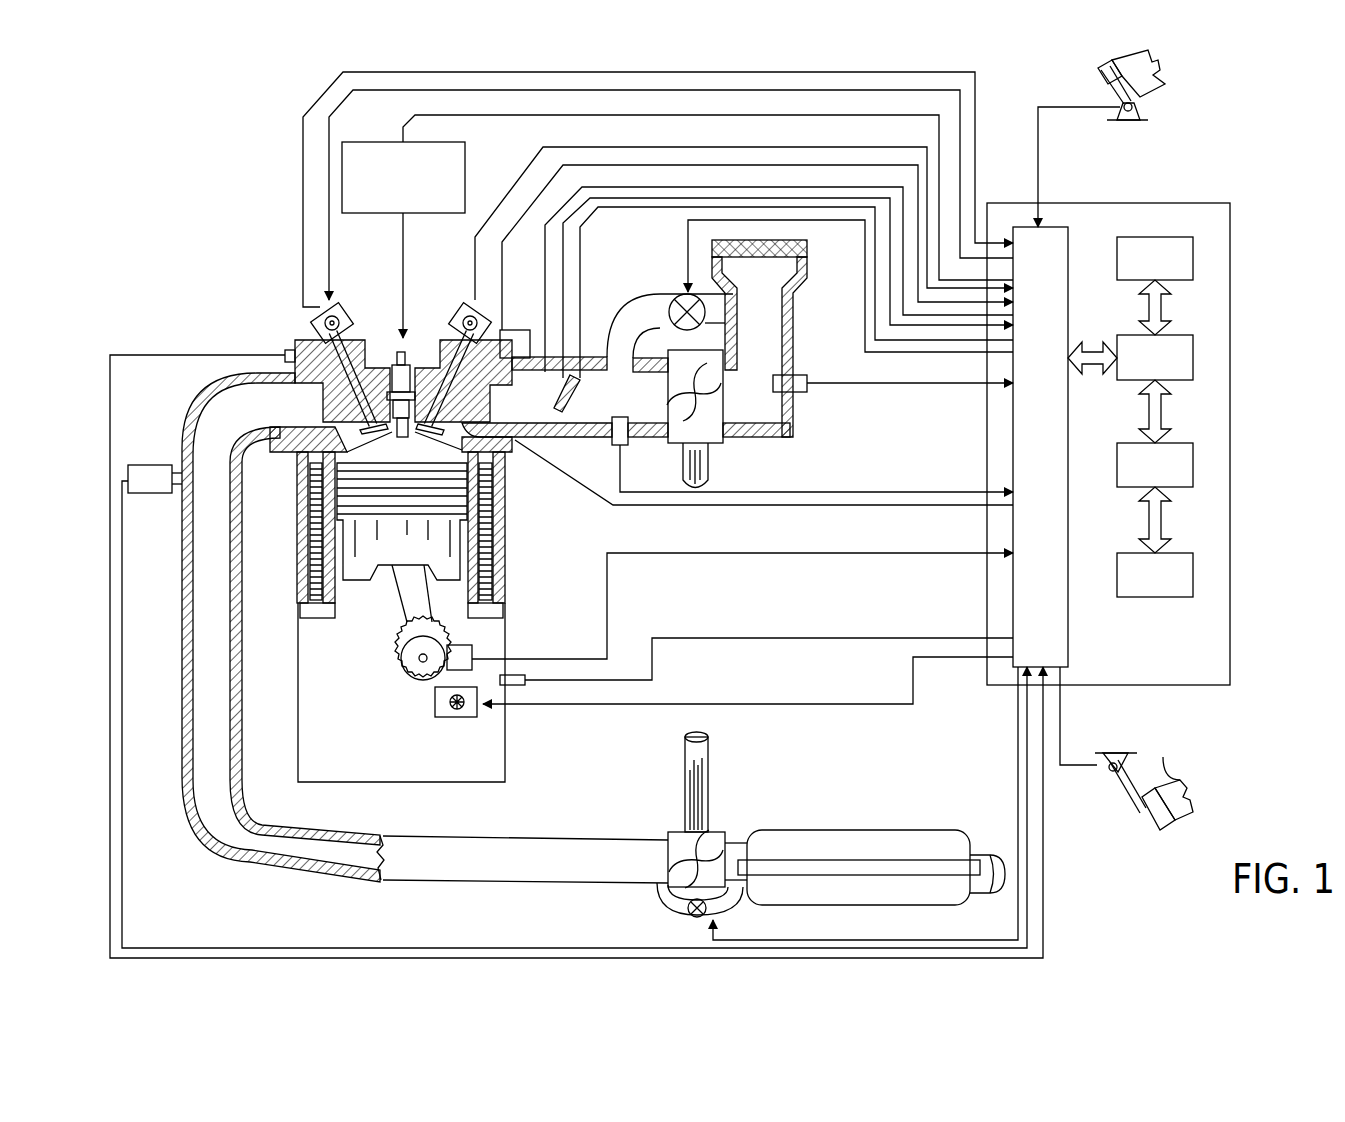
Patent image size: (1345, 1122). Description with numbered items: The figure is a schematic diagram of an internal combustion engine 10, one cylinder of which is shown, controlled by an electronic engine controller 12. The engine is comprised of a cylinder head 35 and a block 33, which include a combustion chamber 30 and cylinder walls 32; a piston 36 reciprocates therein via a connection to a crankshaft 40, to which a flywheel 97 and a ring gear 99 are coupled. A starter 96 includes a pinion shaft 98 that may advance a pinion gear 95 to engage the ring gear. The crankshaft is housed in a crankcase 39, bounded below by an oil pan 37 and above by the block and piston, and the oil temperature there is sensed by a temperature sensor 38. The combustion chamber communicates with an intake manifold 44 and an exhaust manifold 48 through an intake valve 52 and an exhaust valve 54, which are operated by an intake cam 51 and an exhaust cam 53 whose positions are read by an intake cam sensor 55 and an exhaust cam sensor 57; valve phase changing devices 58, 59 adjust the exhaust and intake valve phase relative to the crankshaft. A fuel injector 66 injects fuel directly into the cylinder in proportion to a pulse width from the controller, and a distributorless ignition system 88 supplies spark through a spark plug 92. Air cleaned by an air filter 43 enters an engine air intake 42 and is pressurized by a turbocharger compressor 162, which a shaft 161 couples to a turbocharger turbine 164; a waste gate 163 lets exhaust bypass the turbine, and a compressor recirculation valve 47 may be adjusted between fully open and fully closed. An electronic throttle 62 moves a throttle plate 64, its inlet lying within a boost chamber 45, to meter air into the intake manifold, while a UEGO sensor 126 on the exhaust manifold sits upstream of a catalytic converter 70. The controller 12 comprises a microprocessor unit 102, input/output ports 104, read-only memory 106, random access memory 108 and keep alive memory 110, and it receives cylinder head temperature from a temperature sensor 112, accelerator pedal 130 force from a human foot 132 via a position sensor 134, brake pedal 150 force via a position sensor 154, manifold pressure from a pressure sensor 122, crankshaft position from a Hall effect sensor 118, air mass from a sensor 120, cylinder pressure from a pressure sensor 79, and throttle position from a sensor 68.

The internal combustion engine 10 is at (230, 292).
The electronic engine controller 12 is at (1232, 203).
The combustion chamber 30 is at (397, 447).
The cylinder walls 32 is at (343, 600).
The engine block 33 is at (291, 489).
The cylinder head 35 is at (292, 345).
The piston 36 is at (392, 583).
The oil pan 37 is at (505, 758).
The temperature sensor 38 is at (522, 681).
The crankcase 39 is at (316, 702).
The crankshaft 40 is at (402, 690).
The engine air intake 42 is at (628, 262).
The air filter 43 is at (770, 250).
The intake manifold 44 is at (537, 397).
The boost chamber 45 is at (704, 397).
The compressor recirculation valve 47 is at (672, 295).
The exhaust manifold 48 is at (281, 627).
The intake cam 51 is at (462, 316).
The intake valve 52 is at (445, 418).
The exhaust cam 53 is at (335, 315).
The exhaust valve 54 is at (345, 425).
The intake cam sensor 55 is at (490, 332).
The exhaust cam sensor 57 is at (322, 318).
The valve phase changing device 58 is at (345, 325).
The valve phase changing device 59 is at (482, 312).
The electronic throttle 62 is at (572, 390).
The throttle plate 64 is at (568, 418).
The fuel injector 66 is at (536, 452).
The throttle position sensor 68 is at (500, 356).
The catalytic converter 70 is at (790, 830).
The cylinder pressure sensor 79 is at (412, 368).
The distributorless ignition system 88 is at (365, 142).
The spark plug 92 is at (397, 352).
The pinion gear 95 is at (445, 718).
The starter 96 is at (460, 710).
The flywheel 97 is at (400, 658).
The pinion shaft 98 is at (448, 722).
The ring gear 99 is at (425, 705).
The microprocessor unit 102 is at (1195, 350).
The input/output ports 104 is at (1068, 232).
The read-only memory 106 is at (1195, 252).
The random access memory 108 is at (1195, 457).
The keep alive memory 110 is at (1195, 567).
The temperature sensor 112 is at (285, 352).
The Hall effect sensor 118 is at (470, 650).
The air mass sensor 120 is at (805, 375).
The pressure sensor 122 is at (612, 440).
The Universal Exhaust Gas Oxygen sensor 126 is at (151, 465).
The accelerator pedal 130 is at (1105, 80).
The human foot 132 is at (1165, 70).
The position sensor 134 is at (1140, 107).
The brake pedal 150 is at (1140, 815).
The position sensor 154 is at (1100, 762).
The shaft 161 is at (683, 465).
The turbocharger compressor 162 is at (718, 430).
The waste gate 163 is at (690, 915).
The turbocharger turbine 164 is at (672, 832).